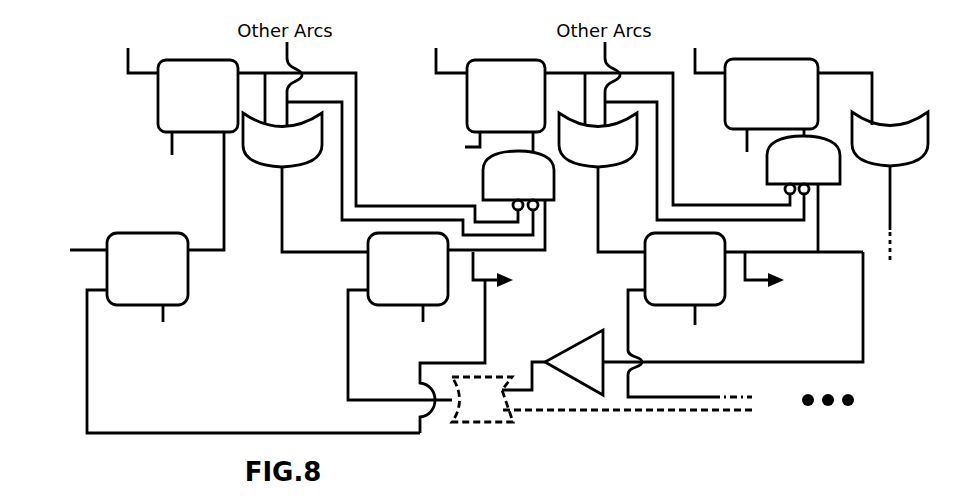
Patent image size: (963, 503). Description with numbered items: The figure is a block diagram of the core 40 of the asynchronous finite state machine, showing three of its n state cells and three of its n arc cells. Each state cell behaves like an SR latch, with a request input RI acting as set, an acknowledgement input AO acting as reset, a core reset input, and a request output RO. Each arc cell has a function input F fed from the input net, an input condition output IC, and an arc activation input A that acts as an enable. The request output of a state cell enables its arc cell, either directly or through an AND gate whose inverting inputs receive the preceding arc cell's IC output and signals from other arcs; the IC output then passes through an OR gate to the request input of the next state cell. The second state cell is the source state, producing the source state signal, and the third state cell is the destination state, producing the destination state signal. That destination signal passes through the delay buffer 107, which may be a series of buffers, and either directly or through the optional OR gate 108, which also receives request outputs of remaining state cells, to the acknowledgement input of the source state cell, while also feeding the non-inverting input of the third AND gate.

The core 40 is at (49, 51).
The delay buffer 107 is at (552, 362).
The optional OR gate 108 is at (602, 399).